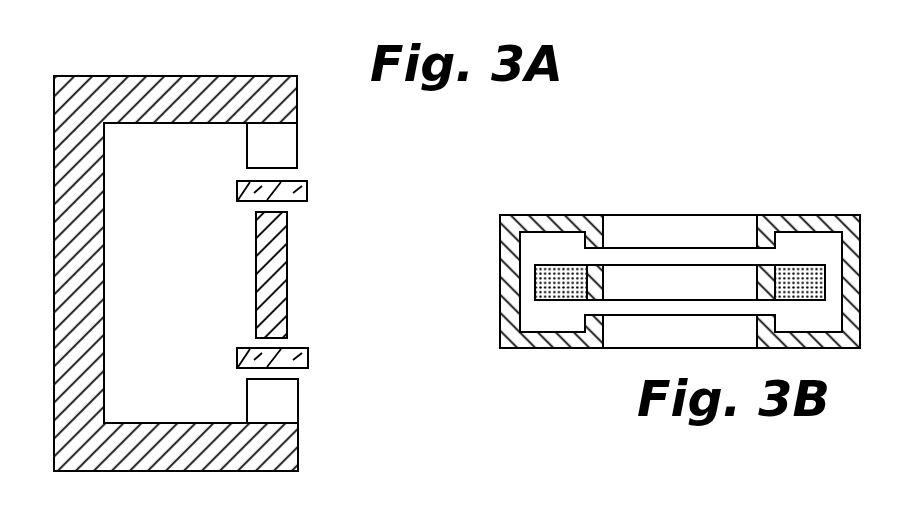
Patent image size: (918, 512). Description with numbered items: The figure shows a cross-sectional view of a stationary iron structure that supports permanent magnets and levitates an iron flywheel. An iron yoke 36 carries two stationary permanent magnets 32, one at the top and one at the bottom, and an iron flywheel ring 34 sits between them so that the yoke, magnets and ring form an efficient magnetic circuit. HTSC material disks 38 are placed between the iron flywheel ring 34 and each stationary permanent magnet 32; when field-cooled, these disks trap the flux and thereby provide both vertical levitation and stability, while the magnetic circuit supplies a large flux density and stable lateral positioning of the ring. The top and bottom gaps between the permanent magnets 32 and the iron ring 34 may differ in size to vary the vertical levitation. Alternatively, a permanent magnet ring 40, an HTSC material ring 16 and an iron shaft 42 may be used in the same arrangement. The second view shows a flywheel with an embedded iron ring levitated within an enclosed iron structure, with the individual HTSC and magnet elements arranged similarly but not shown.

The iron yoke 36 is at (137, 76).
The stationary permanent magnet 32 is at (298, 138).
The HTSC material disk 38 is at (308, 190).
The iron flywheel ring 34 is at (297, 275).
The iron shaft 42 is at (288, 300).
The HTSC material ring 16 is at (309, 356).
The permanent magnet ring 40 is at (299, 389).